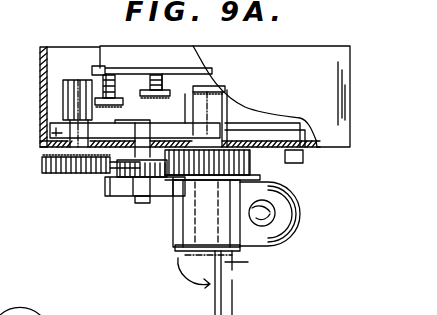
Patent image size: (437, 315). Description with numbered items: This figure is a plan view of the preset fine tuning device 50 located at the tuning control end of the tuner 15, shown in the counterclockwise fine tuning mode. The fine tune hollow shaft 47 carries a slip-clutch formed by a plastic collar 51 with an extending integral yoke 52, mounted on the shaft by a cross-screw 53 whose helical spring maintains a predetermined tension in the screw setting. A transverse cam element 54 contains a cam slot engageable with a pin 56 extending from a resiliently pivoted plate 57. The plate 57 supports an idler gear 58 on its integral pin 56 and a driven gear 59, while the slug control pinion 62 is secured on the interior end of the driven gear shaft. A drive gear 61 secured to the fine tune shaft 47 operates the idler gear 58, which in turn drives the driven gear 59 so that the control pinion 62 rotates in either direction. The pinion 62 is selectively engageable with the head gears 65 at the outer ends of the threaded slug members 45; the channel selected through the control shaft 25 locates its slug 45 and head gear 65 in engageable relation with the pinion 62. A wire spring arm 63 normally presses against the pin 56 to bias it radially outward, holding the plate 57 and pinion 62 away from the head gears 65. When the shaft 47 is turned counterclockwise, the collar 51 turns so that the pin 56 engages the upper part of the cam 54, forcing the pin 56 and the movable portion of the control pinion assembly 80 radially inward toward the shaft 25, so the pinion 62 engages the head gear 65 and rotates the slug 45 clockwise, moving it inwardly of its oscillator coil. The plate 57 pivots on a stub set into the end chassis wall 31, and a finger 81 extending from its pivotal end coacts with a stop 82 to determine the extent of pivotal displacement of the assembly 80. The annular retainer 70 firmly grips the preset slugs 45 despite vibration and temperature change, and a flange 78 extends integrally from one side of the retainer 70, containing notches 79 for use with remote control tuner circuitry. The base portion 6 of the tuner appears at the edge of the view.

The base 6 is at (1, 79).
The tuner 15 is at (350, 86).
The control shaft 25 is at (230, 307).
The end chassis wall 31 is at (42, 60).
The threaded slug member 45 is at (123, 86).
The fine tune hollow shaft 47 is at (236, 276).
The preset fine tuning device 50 is at (133, 212).
The collar 51 is at (175, 246).
The yoke 52 is at (286, 228).
The cross-screw 53 is at (280, 214).
The cam element 54 is at (105, 187).
The pin 56 is at (146, 203).
The plate 57 is at (60, 133).
The idler gear 58 is at (122, 178).
The driven gear 59 is at (55, 175).
The drive gear 61 is at (258, 166).
The slug control pinion 62 is at (62, 103).
The wire spring arm 63 is at (166, 180).
The head gear 65 is at (162, 94).
The retainer 70 is at (93, 54).
The flange 78 is at (113, 68).
The notch 79 is at (158, 74).
The control pinion assembly 80 is at (50, 314).
The finger 81 is at (211, 88).
The stop 82 is at (187, 96).